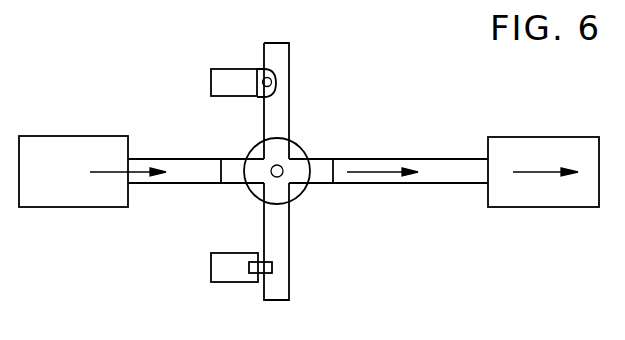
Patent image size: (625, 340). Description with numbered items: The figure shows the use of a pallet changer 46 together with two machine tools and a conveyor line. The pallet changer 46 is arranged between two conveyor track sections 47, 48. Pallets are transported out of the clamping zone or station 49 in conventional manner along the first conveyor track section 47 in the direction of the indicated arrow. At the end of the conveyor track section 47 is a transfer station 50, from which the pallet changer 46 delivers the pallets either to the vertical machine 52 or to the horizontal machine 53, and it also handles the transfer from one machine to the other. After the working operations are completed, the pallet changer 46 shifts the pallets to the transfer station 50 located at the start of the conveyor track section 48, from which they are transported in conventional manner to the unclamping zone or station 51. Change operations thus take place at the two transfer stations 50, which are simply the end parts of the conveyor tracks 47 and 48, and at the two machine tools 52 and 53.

The pallet changer 46 is at (305, 144).
The conveyor track section 47 is at (181, 182).
The conveyor track section 48 is at (445, 184).
The clamping zone or station 49 is at (66, 201).
The transfer station 50 is at (231, 181).
The unclamping zone or station 51 is at (539, 201).
The vertical machine 52 is at (232, 72).
The horizontal machine 53 is at (233, 283).